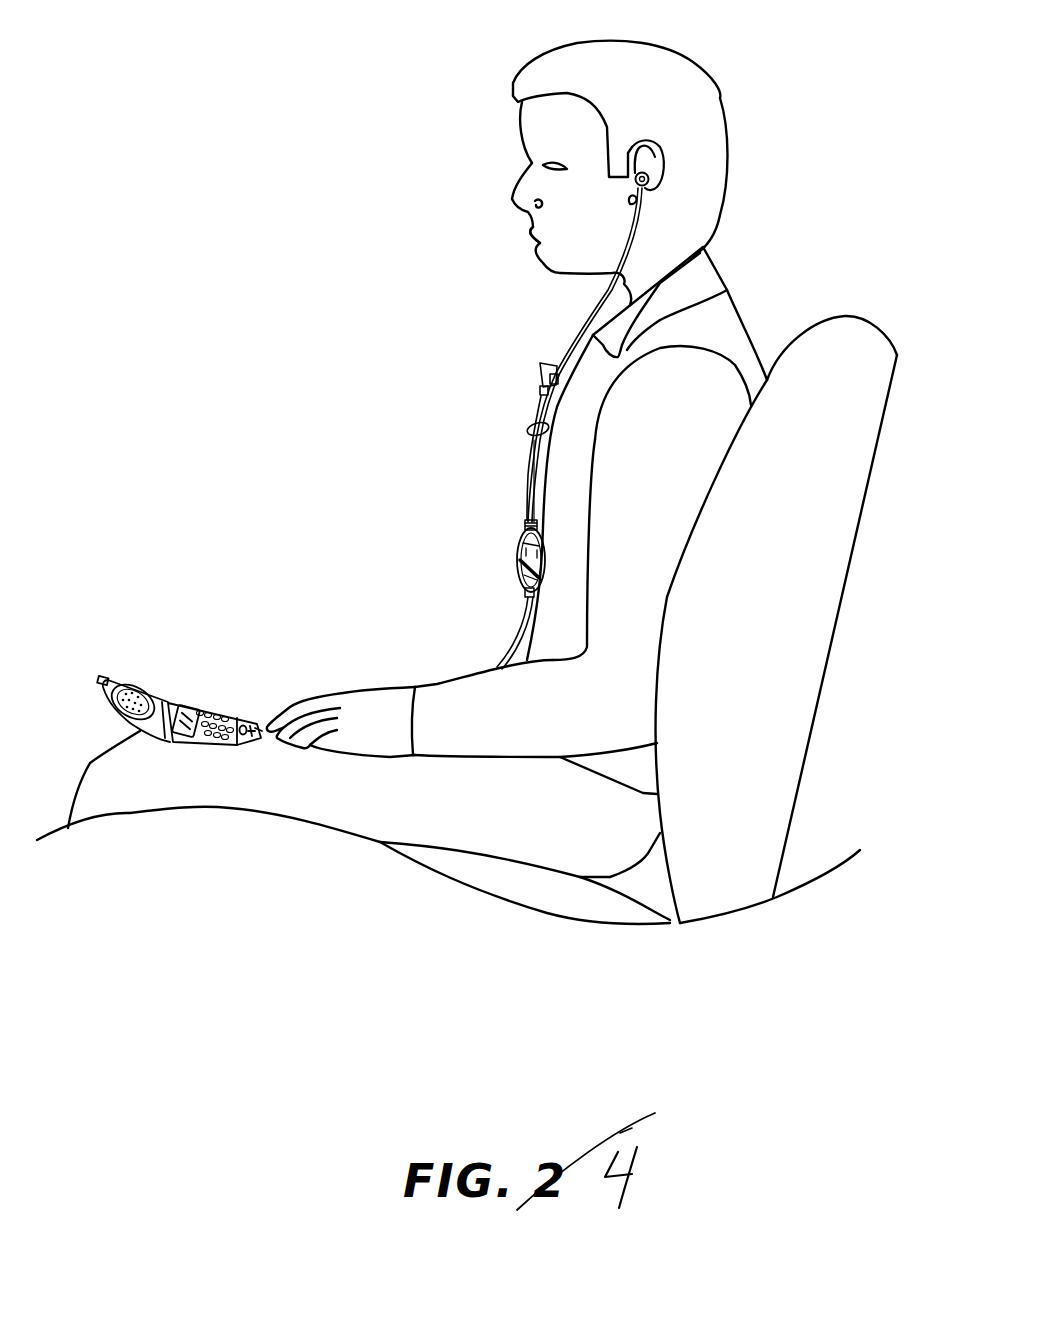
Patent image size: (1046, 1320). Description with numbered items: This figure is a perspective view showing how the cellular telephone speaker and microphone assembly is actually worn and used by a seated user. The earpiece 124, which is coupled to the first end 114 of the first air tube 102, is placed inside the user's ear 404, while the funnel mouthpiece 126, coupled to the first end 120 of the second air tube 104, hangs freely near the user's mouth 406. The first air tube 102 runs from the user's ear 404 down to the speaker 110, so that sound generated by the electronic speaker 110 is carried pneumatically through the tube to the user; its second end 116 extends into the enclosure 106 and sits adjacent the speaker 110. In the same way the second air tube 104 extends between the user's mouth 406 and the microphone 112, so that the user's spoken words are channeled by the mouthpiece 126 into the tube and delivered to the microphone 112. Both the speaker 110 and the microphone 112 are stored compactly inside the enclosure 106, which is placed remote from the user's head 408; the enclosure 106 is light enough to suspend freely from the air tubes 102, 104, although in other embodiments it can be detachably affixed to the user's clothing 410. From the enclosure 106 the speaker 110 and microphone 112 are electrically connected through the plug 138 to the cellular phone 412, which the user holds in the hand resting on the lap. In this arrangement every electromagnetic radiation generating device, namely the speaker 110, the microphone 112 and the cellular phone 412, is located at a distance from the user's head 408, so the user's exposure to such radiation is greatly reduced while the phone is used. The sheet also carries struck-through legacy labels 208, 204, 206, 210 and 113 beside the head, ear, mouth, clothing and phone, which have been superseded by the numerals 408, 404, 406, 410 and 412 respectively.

The user's head 408 is at (602, 152).
The user's head 208 is at (618, 63).
The user's ear 404 is at (704, 128).
The ear 204 is at (650, 143).
The earpiece 124 is at (662, 158).
The user's mouth 406 is at (470, 191).
The mouth 206 is at (533, 233).
The first end of the first air tube 114 is at (640, 240).
The funnel mouthpiece 126 is at (541, 364).
The first end of the second air tube 120 is at (538, 400).
The second air tube 104 is at (528, 475).
The user's clothing 410 is at (402, 585).
The user's torso 210 is at (517, 497).
The microphone 112 is at (458, 565).
The second end of the first air tube 116 is at (513, 560).
The enclosure 106 is at (517, 577).
The speaker 110 is at (520, 590).
The first air tube 102 is at (583, 337).
The cellular phone 412 is at (189, 693).
The cellular telephone 113 is at (182, 702).
The plug 138 is at (247, 735).